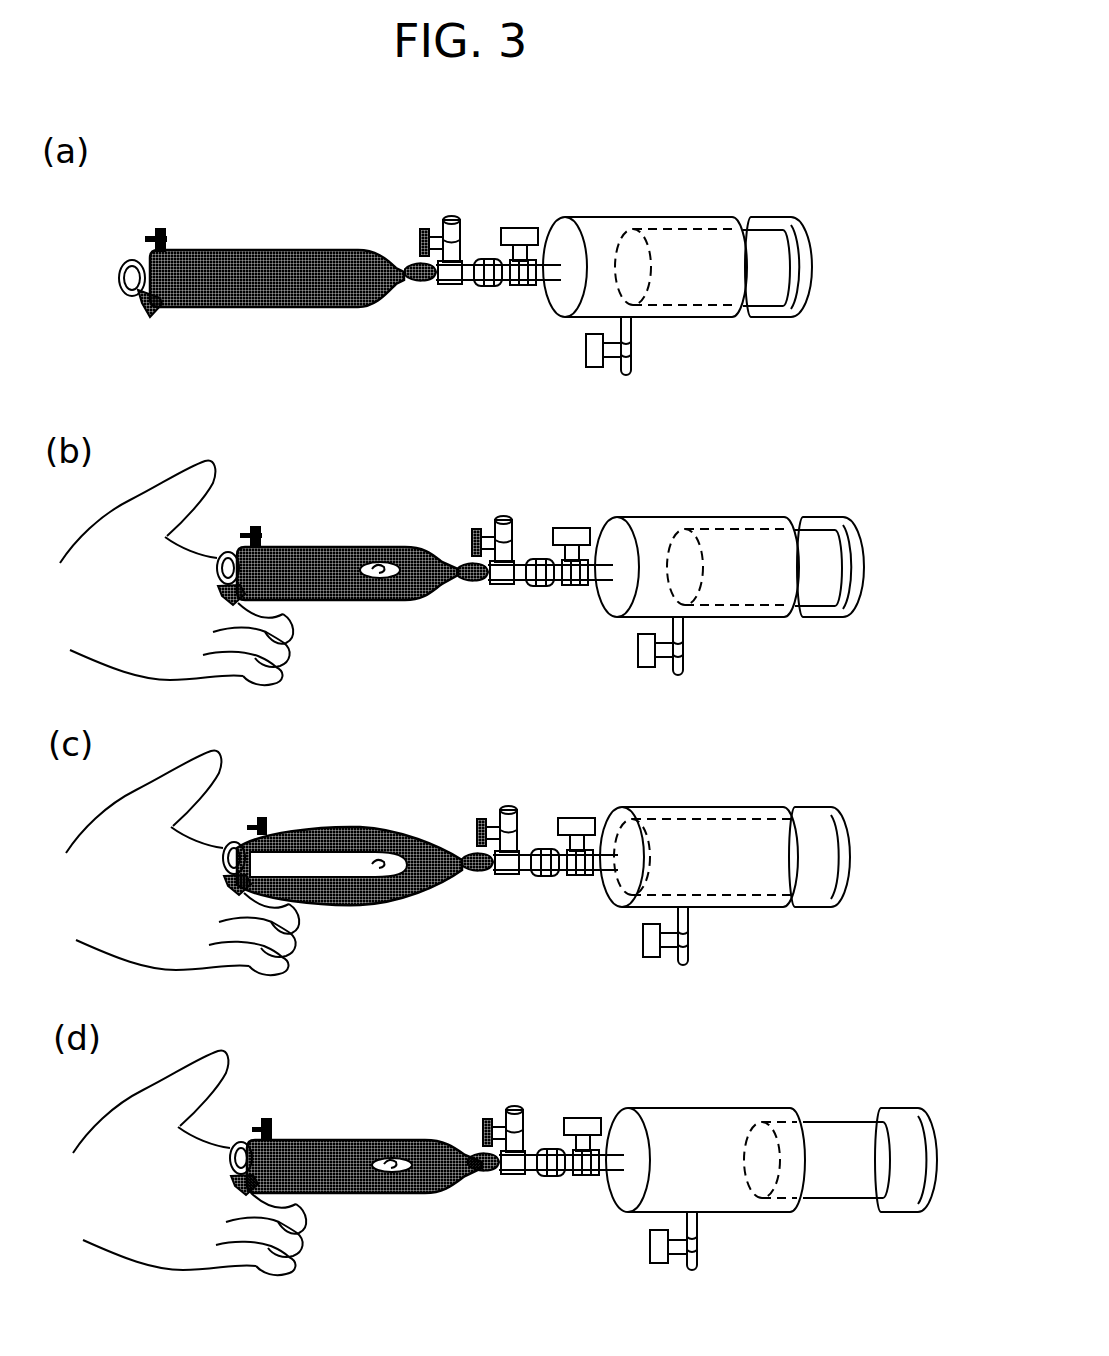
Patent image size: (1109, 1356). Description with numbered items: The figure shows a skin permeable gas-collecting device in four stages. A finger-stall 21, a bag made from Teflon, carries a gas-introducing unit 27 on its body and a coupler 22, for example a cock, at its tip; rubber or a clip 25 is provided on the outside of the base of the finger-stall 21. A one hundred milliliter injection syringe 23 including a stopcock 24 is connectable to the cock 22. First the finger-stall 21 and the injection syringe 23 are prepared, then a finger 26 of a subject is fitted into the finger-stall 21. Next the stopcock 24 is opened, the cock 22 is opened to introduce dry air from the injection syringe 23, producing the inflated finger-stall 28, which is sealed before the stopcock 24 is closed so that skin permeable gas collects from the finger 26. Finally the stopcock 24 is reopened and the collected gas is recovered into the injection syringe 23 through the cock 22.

The finger-stall 21 is at (264, 248).
The coupler 22 is at (459, 285).
The injection syringe 23 is at (621, 218).
The stopcock 24 is at (518, 230).
The rubber or clip 25 is at (158, 320).
The finger 26 is at (245, 669).
The gas-introducing unit 27 is at (157, 226).
The inflated finger-stall 28 is at (330, 827).